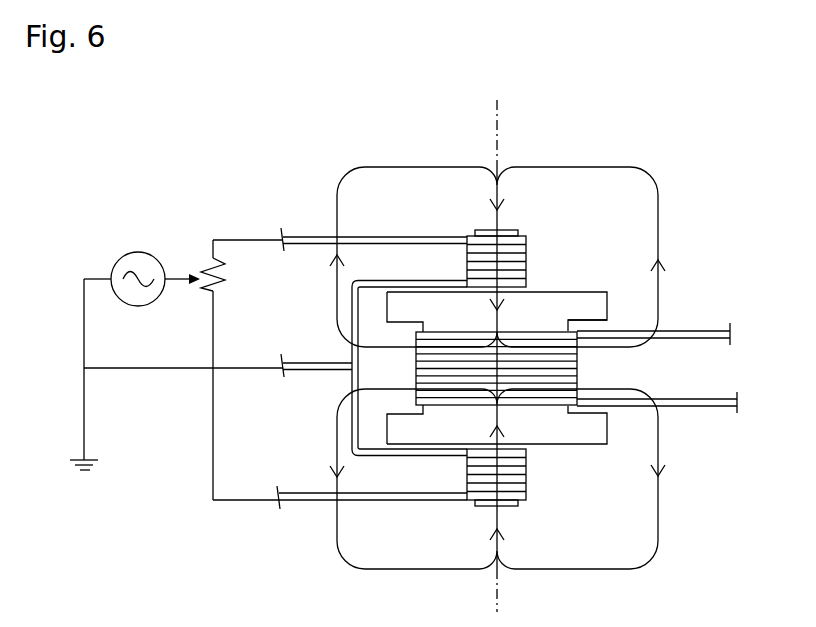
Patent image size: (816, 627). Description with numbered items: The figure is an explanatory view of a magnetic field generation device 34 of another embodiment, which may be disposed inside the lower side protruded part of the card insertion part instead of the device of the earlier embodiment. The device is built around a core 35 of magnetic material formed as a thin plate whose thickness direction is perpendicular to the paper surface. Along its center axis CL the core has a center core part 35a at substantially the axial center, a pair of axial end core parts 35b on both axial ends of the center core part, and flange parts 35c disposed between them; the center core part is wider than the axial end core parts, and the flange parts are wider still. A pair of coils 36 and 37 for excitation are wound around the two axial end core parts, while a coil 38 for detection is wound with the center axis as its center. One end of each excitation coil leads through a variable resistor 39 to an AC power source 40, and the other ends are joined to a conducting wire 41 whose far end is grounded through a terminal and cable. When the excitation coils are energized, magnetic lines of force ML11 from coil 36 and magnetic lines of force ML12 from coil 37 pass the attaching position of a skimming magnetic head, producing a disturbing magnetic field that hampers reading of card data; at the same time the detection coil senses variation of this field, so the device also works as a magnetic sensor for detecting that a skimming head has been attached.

The magnetic field generation device 34 is at (679, 81).
The core 35 is at (509, 230).
The center core part 35a is at (591, 320).
The axial end core parts 35b is at (508, 508).
The flange parts 35c is at (589, 291).
The coil for excitation 36 is at (408, 236).
The coil for excitation 37 is at (400, 503).
The coil for detection 38 is at (711, 330).
The variable resistor 39 is at (189, 298).
The AC power source 40 is at (138, 251).
The conducting wire 41 is at (300, 362).
The center axis CL is at (501, 130).
The magnetic lines of force ML11 is at (659, 214).
The magnetic lines of force ML12 is at (659, 516).